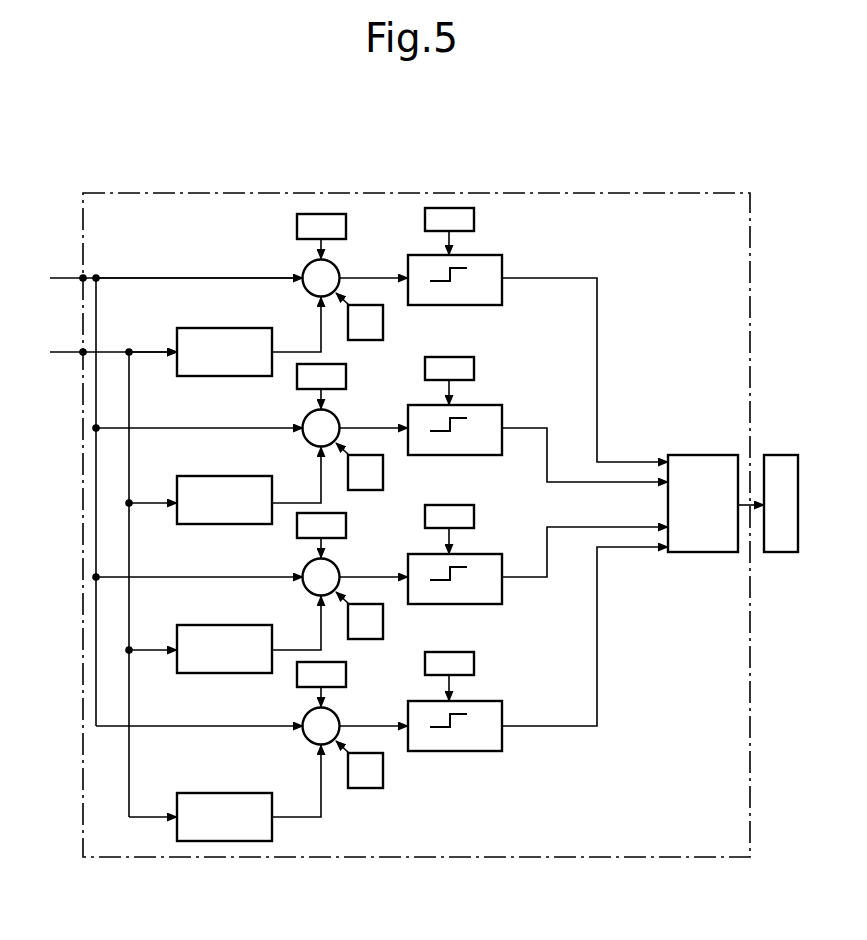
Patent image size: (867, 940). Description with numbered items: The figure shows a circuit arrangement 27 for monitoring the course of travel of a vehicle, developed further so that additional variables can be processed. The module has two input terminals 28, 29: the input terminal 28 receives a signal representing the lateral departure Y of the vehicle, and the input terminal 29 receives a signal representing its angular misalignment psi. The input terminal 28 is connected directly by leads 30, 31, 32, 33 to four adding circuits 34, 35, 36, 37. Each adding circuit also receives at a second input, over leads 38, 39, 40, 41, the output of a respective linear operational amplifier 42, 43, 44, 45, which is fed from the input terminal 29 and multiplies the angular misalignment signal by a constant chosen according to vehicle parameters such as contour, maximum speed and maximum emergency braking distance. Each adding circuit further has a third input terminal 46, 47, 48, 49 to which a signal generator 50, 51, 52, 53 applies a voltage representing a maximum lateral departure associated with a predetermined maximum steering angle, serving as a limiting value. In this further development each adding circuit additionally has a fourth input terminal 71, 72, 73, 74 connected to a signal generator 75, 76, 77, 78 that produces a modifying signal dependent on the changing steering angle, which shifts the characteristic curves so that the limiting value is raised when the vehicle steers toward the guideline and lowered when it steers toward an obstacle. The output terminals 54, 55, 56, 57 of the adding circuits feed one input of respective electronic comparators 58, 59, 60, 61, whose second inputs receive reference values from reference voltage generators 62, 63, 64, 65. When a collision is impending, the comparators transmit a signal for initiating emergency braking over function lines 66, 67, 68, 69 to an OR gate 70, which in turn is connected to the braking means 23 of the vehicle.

The braking means 23 is at (775, 466).
The circuit arrangement 27 is at (160, 190).
The input terminal 28 is at (82, 273).
The input terminal 29 is at (82, 355).
The lead 30 is at (195, 282).
The lead 31 is at (168, 430).
The lead 32 is at (164, 580).
The lead 33 is at (167, 730).
The adding circuit 34 is at (316, 282).
The adding circuit 35 is at (310, 437).
The adding circuit 36 is at (312, 585).
The adding circuit 37 is at (312, 737).
The lead 38 is at (290, 355).
The lead 39 is at (294, 506).
The lead 40 is at (290, 656).
The lead 41 is at (290, 816).
The linear operational amplifier 42 is at (207, 338).
The linear operational amplifier 43 is at (202, 490).
The linear operational amplifier 44 is at (202, 637).
The linear operational amplifier 45 is at (197, 808).
The third input terminal 46 is at (318, 246).
The third input terminal 47 is at (318, 396).
The third input terminal 48 is at (318, 542).
The third input terminal 49 is at (318, 693).
The signal generator 50 is at (346, 224).
The signal generator 51 is at (346, 376).
The signal generator 52 is at (346, 525).
The signal generator 53 is at (346, 673).
The output terminal 54 is at (366, 280).
The output terminal 55 is at (370, 430).
The output terminal 56 is at (363, 580).
The output terminal 57 is at (366, 728).
The comparator 58 is at (490, 268).
The comparator 59 is at (488, 418).
The comparator 60 is at (488, 562).
The comparator 61 is at (488, 708).
The reference voltage generator 62 is at (474, 219).
The reference voltage generator 63 is at (474, 368).
The reference voltage generator 64 is at (474, 514).
The reference voltage generator 65 is at (474, 662).
The function line 66 is at (597, 333).
The function line 67 is at (547, 460).
The function line 68 is at (548, 563).
The function line 69 is at (597, 653).
The OR gate 70 is at (695, 466).
The fourth input terminal 71 is at (348, 303).
The fourth input terminal 72 is at (348, 453).
The fourth input terminal 73 is at (348, 602).
The fourth input terminal 74 is at (348, 751).
The signal generator 75 is at (383, 327).
The signal generator 76 is at (383, 477).
The signal generator 77 is at (383, 626).
The signal generator 78 is at (383, 777).